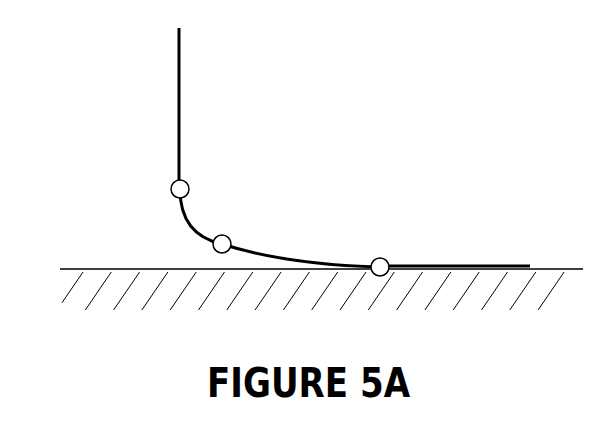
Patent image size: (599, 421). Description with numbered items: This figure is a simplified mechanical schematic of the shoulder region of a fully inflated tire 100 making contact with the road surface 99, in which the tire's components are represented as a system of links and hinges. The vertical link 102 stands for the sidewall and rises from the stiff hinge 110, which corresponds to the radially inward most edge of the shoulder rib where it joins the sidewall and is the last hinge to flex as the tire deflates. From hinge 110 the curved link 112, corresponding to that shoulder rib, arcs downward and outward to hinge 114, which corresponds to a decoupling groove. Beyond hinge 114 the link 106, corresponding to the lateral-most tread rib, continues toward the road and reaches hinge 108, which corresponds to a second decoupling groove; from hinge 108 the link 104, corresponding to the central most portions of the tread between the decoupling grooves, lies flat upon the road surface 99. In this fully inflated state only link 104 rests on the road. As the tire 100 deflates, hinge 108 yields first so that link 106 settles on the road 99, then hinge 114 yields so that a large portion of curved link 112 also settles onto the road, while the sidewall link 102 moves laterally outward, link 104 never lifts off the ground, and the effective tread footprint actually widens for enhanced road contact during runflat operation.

The road surface 99 is at (425, 290).
The tire 100 is at (126, 40).
The link 102 is at (182, 70).
The link 104 is at (470, 263).
The link 106 is at (260, 250).
The hinge 108 is at (377, 258).
The hinge 110 is at (172, 186).
The curved link 112 is at (187, 225).
The hinge 114 is at (223, 235).